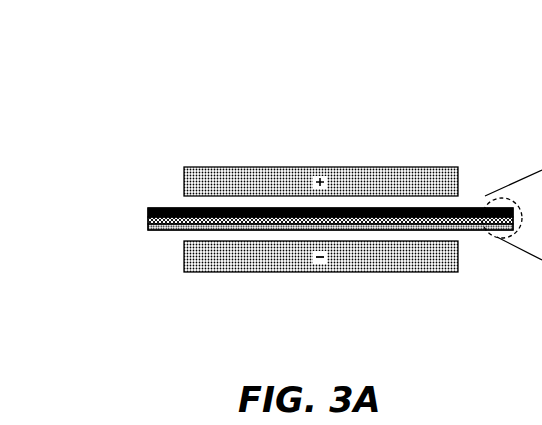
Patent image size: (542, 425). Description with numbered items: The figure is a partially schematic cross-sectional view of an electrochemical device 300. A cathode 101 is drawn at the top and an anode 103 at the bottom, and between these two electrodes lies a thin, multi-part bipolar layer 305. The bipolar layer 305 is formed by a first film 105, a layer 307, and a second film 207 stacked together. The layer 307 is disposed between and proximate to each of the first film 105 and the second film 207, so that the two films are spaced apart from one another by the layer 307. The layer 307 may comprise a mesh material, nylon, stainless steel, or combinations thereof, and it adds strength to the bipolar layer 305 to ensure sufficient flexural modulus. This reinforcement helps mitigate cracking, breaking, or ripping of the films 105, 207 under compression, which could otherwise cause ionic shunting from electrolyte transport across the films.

The electrochemical device 300 is at (90, 72).
The cathode 101 is at (184, 167).
The anode 103 is at (183, 257).
The bipolar layer 305 is at (124, 170).
The first film 105 is at (148, 208).
The layer 307 is at (146, 220).
The second film 207 is at (147, 231).